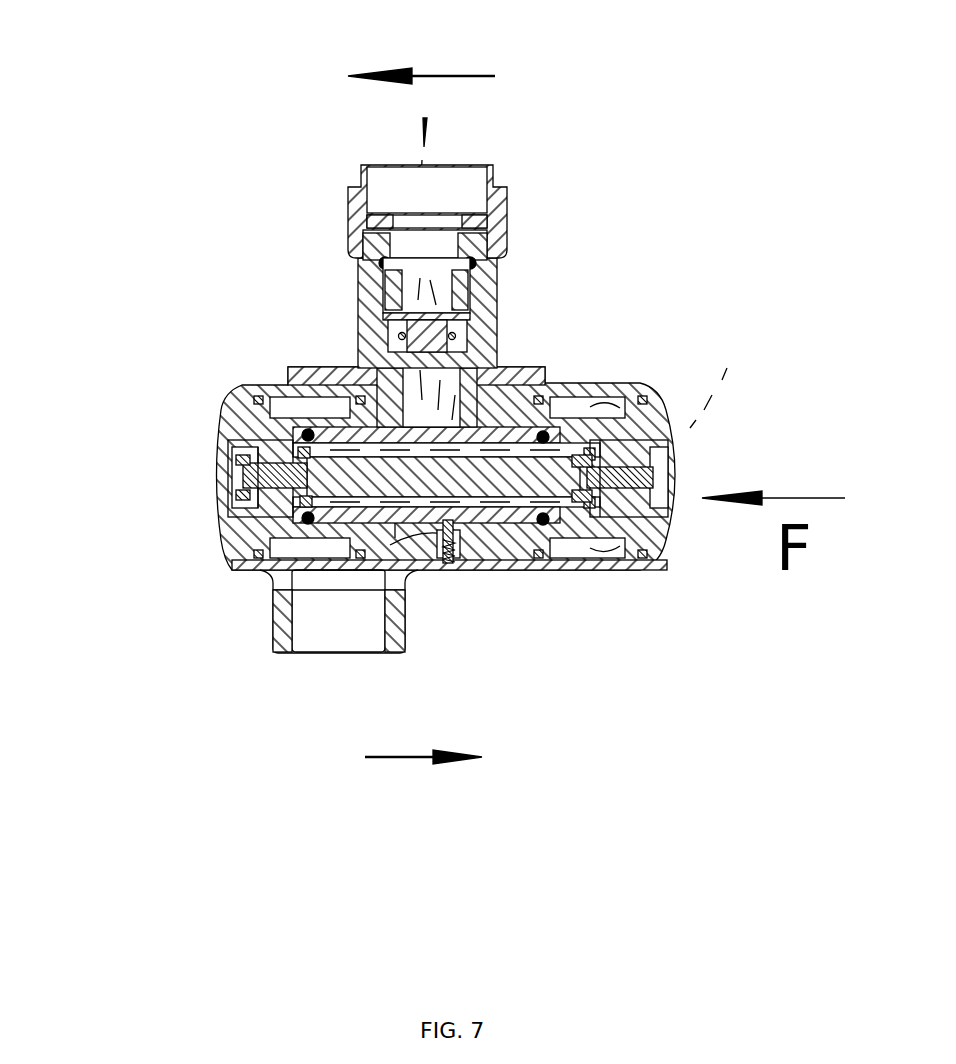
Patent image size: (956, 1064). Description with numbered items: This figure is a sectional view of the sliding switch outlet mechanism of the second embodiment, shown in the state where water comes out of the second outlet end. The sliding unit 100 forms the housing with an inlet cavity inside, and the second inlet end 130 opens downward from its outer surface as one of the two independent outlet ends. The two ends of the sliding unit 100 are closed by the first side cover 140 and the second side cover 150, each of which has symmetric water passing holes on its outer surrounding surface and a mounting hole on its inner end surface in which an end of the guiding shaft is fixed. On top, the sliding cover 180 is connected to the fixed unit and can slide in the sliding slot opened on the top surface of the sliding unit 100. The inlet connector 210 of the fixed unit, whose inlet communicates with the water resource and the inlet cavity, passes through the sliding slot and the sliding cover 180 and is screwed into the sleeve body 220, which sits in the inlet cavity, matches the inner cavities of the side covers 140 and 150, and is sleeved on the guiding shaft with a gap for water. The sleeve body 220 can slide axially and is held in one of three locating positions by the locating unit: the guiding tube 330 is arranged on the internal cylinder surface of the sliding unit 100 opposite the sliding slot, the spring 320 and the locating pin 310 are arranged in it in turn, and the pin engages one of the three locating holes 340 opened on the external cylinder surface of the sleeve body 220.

The sliding unit 100 is at (275, 392).
The second inlet end 130 is at (273, 645).
The first side cover 140 is at (662, 572).
The second side cover 150 is at (243, 533).
The sliding cover 180 is at (477, 413).
The inlet connector 210 is at (373, 332).
The sleeve body 220 is at (315, 535).
The locating pin 310 is at (455, 522).
The spring 320 is at (460, 532).
The guiding tube 330 is at (440, 547).
The locating hole 340 is at (400, 525).